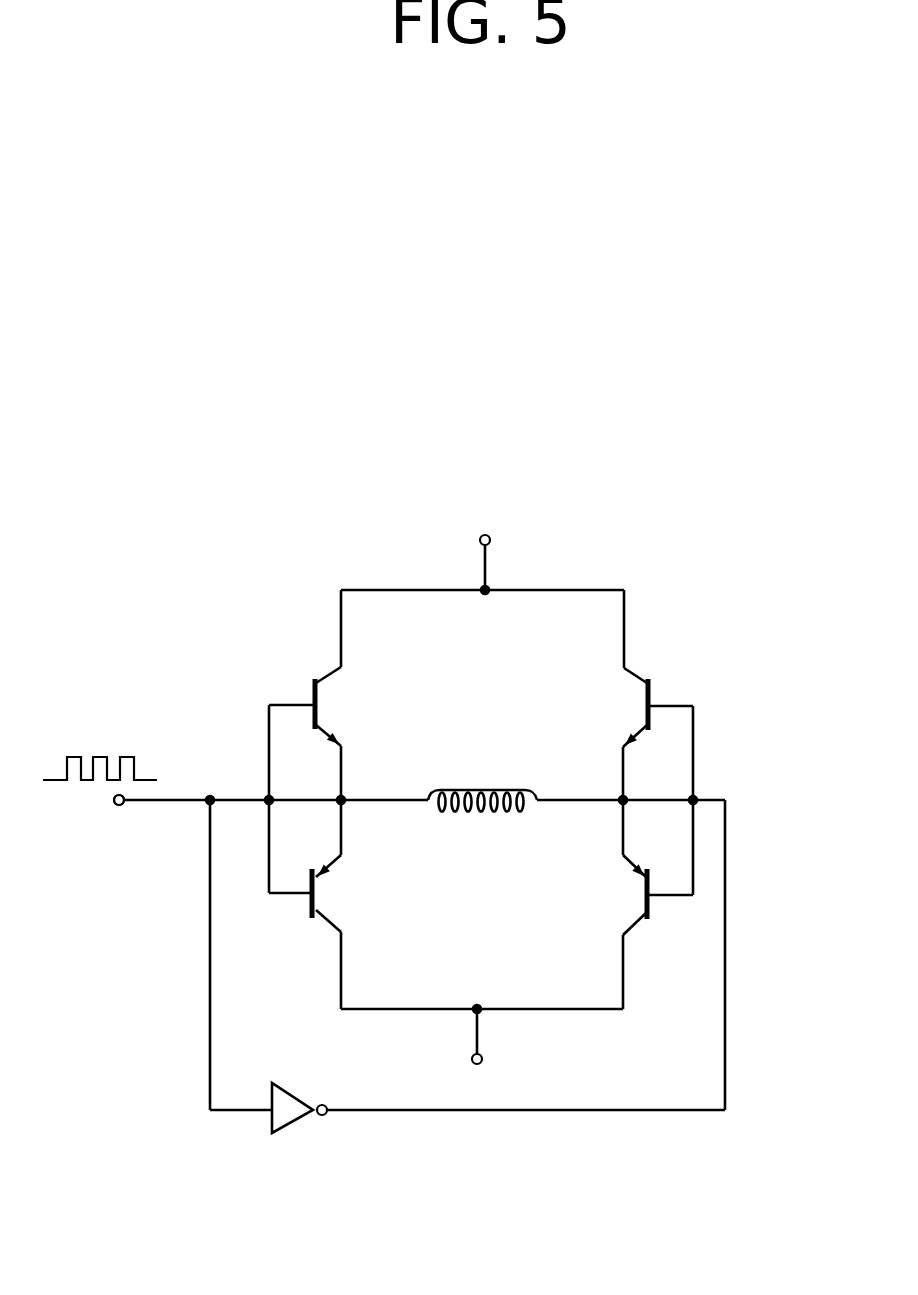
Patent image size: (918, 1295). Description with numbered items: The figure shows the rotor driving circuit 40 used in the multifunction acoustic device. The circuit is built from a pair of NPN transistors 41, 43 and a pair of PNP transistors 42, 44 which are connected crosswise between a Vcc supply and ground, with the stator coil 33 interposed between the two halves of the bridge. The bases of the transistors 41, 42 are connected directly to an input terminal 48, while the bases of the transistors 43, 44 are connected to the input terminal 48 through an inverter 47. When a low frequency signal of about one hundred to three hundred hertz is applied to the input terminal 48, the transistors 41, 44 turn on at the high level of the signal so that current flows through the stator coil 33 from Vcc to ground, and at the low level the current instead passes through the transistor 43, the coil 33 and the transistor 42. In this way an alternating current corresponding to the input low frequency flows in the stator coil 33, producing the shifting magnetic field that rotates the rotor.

The stator coil 33 is at (480, 818).
The rotor driving circuit 40 is at (590, 558).
The NPN transistor 41 is at (315, 682).
The PNP transistor 42 is at (310, 905).
The NPN transistor 43 is at (650, 685).
The PNP transistor 44 is at (652, 910).
The inverter 47 is at (300, 1125).
The input terminal 48 is at (118, 806).